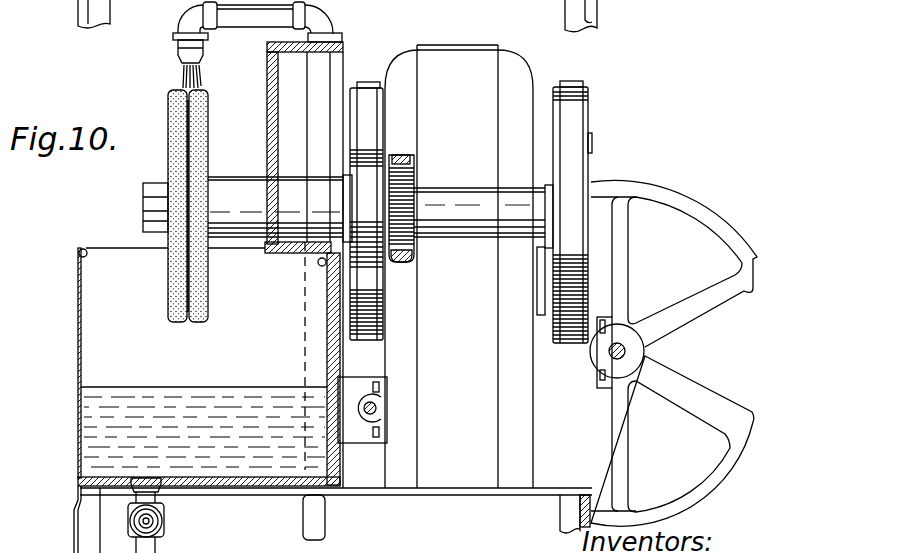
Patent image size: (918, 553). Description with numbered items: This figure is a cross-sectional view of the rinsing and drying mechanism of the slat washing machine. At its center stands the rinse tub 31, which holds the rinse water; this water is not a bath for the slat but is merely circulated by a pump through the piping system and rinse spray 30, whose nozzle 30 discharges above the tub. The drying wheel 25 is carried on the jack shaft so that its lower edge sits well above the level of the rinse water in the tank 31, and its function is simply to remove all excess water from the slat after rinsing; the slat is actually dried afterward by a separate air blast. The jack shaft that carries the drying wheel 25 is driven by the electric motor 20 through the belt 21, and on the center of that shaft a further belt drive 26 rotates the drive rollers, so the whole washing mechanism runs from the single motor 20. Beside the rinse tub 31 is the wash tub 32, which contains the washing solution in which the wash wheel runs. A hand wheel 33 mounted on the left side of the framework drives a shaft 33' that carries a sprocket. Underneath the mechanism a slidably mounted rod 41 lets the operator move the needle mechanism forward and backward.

The electric motor 20 is at (481, 24).
The belt 21 is at (572, 96).
The drying wheel 25 is at (168, 107).
The belt drive 26 is at (412, 158).
The rinse spray 30 is at (183, 16).
The rinse tub 31 is at (75, 292).
The wash tub 32 is at (164, 515).
The hand wheel 33 is at (674, 344).
The shaft 33' is at (644, 352).
The rod 41 is at (388, 407).